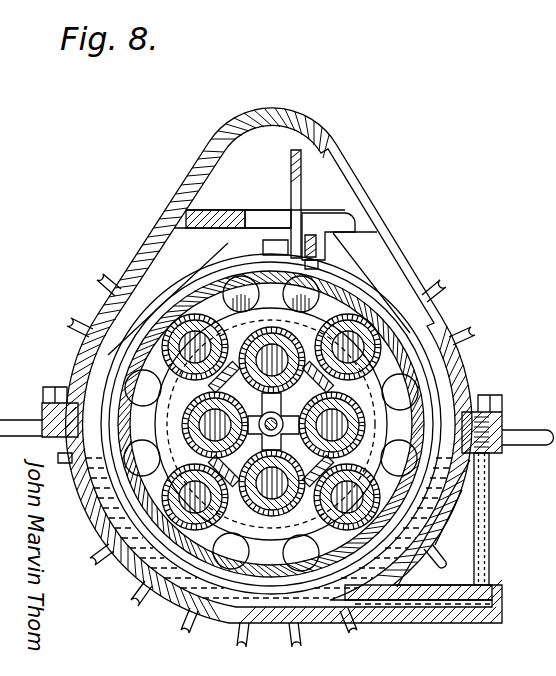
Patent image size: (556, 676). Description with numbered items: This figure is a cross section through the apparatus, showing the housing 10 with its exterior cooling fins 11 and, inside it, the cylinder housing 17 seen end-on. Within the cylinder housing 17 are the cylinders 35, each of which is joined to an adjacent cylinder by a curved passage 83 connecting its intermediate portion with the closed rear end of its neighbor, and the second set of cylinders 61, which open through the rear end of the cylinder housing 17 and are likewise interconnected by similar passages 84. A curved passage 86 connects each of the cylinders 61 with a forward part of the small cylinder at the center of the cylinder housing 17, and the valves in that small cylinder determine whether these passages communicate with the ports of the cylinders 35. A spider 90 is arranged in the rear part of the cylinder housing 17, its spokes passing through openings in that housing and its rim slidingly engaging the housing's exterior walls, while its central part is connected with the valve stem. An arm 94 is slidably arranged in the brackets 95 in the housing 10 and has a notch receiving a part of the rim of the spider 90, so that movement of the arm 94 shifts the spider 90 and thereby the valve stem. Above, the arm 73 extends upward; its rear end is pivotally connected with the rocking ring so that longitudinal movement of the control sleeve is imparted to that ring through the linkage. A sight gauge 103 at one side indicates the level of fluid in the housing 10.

The housing 10 is at (404, 250).
The cooling fins 11 is at (242, 650).
The cylinder housing 17 is at (352, 298).
The cylinder 35 is at (247, 312).
The cylinder 61 is at (177, 303).
The arm 73 is at (291, 187).
The passage 83 is at (142, 458).
The passage 84 is at (301, 553).
The curved passage 86 is at (399, 458).
The spider 90 is at (138, 330).
The arm 94 is at (320, 264).
The brackets 95 is at (312, 226).
The sight gauge 103 is at (489, 545).